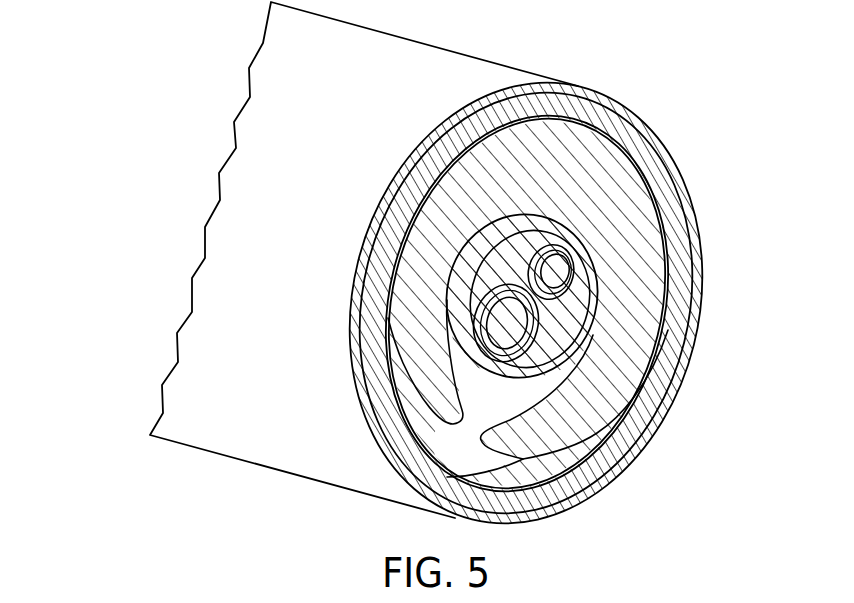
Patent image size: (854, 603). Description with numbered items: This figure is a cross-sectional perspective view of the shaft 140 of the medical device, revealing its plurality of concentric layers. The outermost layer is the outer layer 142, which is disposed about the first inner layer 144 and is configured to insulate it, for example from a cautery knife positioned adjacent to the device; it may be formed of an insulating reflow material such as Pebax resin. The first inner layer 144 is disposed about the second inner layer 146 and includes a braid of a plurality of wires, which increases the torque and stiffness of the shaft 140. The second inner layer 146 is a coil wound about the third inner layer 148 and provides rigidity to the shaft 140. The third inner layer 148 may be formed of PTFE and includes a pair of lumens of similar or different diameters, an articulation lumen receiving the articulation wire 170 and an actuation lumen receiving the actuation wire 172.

The shaft 140 is at (138, 132).
The outer layer 142 is at (574, 88).
The first inner layer 144 is at (670, 192).
The second inner layer 146 is at (653, 262).
The third inner layer 148 is at (578, 298).
The articulation wire 170 is at (553, 262).
The actuation wire 172 is at (497, 318).